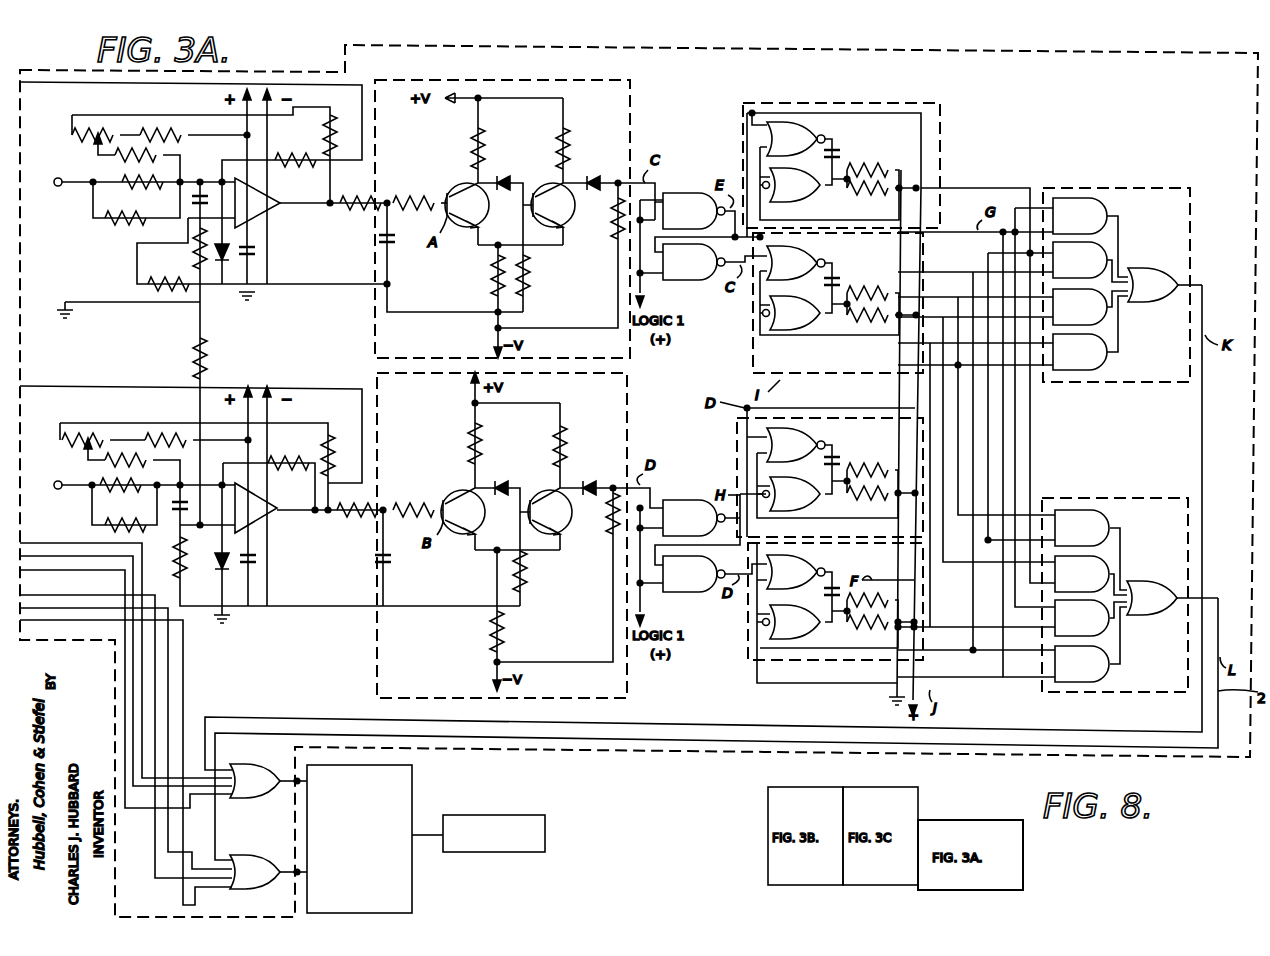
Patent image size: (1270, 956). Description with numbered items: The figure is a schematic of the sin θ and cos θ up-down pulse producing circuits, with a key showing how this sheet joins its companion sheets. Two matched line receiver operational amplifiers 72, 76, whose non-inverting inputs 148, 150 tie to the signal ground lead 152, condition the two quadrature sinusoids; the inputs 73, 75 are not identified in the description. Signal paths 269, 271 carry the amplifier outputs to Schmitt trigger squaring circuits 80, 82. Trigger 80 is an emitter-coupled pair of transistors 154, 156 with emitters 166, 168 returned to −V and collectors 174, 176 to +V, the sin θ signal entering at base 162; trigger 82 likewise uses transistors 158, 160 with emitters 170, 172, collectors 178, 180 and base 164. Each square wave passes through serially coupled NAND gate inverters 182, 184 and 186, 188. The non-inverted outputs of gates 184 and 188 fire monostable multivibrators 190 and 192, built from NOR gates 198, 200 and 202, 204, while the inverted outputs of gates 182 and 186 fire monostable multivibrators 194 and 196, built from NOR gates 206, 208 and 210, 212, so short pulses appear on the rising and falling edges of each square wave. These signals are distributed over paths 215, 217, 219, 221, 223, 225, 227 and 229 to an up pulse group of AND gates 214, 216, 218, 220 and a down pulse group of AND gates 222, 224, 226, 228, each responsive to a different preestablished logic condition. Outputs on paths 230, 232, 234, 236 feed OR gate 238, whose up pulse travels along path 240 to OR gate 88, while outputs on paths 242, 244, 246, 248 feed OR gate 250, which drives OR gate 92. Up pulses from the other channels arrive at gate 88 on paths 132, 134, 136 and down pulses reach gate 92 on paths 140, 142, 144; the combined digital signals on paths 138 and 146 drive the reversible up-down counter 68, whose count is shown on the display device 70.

The reversible up-down counter 68 is at (412, 783).
The display device 70 is at (512, 815).
The amplifier 72 is at (281, 213).
The input terminal 73 is at (75, 175).
The input terminal 75 is at (75, 481).
The amplifier 76 is at (278, 518).
The Schmitt trigger circuit 80 is at (632, 105).
The Schmitt trigger circuit 82 is at (628, 688).
The OR Gate 88 is at (258, 765).
The OR Gate 92 is at (258, 856).
The path 132 is at (38, 540).
The path 134 is at (63, 555).
The path 136 is at (84, 568).
The digital output signal path 138 is at (285, 783).
The path 140 is at (62, 595).
The path 142 is at (90, 606).
The path 144 is at (42, 636).
The digital signal path 146 is at (283, 875).
The non-inverting input 148 is at (203, 300).
The non-inverting input 150 is at (228, 618).
The signal ground lead 152 is at (130, 303).
The transistor 154 is at (488, 217).
The transistor 156 is at (570, 215).
The transistor 158 is at (487, 516).
The transistor 160 is at (562, 512).
The base 162 is at (450, 196).
The base 164 is at (446, 502).
The emitter 166 is at (482, 244).
The emitter 168 is at (565, 244).
The emitter 170 is at (475, 545).
The emitter 172 is at (570, 540).
The collector 174 is at (470, 182).
The collector 176 is at (557, 182).
The collector 178 is at (468, 485).
The collector 180 is at (555, 487).
The NAND Gate inverter 182 is at (692, 192).
The NAND Gate inverter 184 is at (685, 280).
The NAND Gate inverter 186 is at (678, 500).
The NAND Gate inverter 188 is at (685, 592).
The monostable multivibrator 190 is at (942, 150).
The monostable multivibrator 192 is at (736, 432).
The monostable multivibrator 194 is at (745, 348).
The monostable multivibrator 196 is at (748, 640).
The NOR Gate 198 is at (822, 126).
The NOR Gate 200 is at (814, 200).
The NOR Gate 202 is at (822, 251).
The NOR Gate 204 is at (804, 333).
The NOR Gate 206 is at (822, 433).
The NOR Gate 208 is at (804, 513).
The NOR Gate 210 is at (822, 562).
The NOR Gate 212 is at (799, 638).
The AND Gate 214 is at (1110, 208).
The path 215 is at (955, 230).
The AND Gate 216 is at (1112, 252).
The path 217 is at (826, 407).
The AND Gate 218 is at (1112, 318).
The path 219 is at (978, 188).
The AND Gate 220 is at (1110, 362).
The path 221 is at (950, 680).
The AND Gate 222 is at (1110, 518).
The path 223 is at (882, 407).
The AND Gate 224 is at (1112, 562).
The path 225 is at (948, 645).
The AND Gate 226 is at (1112, 628).
The path 227 is at (740, 475).
The AND Gate 228 is at (1108, 672).
The path 229 is at (972, 262).
The path 230 is at (1123, 226).
The path 232 is at (1122, 265).
The path 234 is at (1122, 305).
The path 236 is at (1125, 347).
The OR Gate 238 is at (1180, 278).
The path 240 is at (1205, 370).
The path 242 is at (1122, 538).
The path 244 is at (1120, 578).
The path 246 is at (1122, 618).
The path 248 is at (1125, 658).
The OR Gate 250 is at (1185, 590).
The signal path 269 is at (80, 84).
The signal path 271 is at (92, 387).